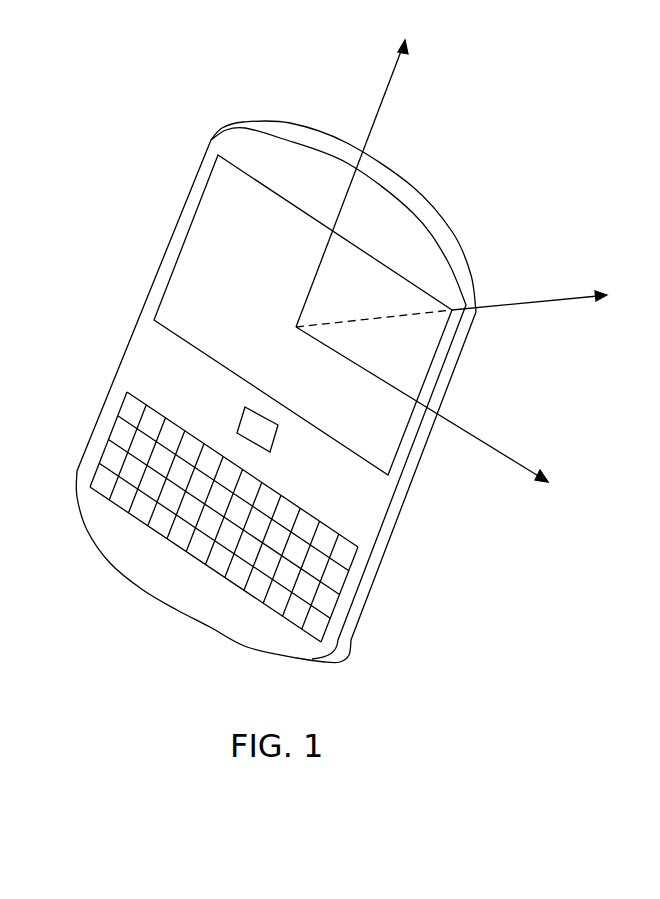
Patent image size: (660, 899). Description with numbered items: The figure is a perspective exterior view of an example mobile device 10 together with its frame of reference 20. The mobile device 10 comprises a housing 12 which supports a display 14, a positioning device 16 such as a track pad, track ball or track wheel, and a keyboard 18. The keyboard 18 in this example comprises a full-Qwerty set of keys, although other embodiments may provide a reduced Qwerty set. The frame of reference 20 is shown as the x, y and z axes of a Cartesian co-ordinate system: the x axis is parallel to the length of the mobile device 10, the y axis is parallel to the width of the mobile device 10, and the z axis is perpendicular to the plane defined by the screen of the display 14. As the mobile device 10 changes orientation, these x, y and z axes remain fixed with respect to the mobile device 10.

The mobile device 10 is at (502, 107).
The housing 12 is at (465, 281).
The display 14 is at (407, 420).
The positioning device 16 is at (268, 438).
The keyboard 18 is at (320, 558).
The frame of reference 20 is at (588, 294).